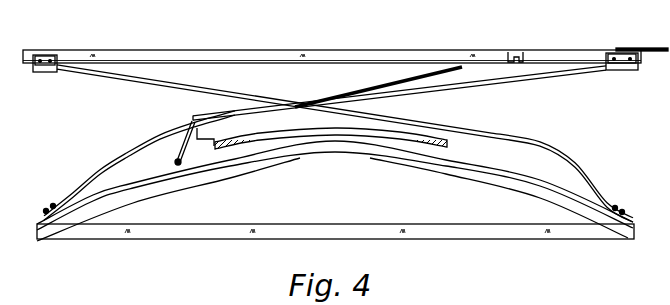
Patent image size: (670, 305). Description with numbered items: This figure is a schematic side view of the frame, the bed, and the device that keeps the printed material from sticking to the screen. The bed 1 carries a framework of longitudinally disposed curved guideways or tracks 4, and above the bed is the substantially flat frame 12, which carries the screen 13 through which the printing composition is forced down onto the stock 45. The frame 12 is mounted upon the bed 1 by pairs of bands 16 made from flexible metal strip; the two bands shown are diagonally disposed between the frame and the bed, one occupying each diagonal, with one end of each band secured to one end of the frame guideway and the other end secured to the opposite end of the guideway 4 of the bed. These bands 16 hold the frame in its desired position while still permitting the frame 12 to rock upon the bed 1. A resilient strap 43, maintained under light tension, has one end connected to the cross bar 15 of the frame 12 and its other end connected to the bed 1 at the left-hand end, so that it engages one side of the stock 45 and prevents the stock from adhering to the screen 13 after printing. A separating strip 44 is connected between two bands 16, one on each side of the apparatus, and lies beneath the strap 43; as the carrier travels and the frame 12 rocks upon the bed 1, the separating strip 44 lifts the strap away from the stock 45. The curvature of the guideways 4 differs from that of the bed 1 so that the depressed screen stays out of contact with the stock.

The bed 1 is at (145, 182).
The guideways or tracks 4 is at (538, 190).
The frame 12 is at (356, 50).
The screen 13 is at (244, 66).
The cross bar 15 is at (523, 52).
The bands 16 is at (536, 76).
The strap 43 is at (368, 86).
The separating strip 44 is at (216, 134).
The stock 45 is at (332, 129).